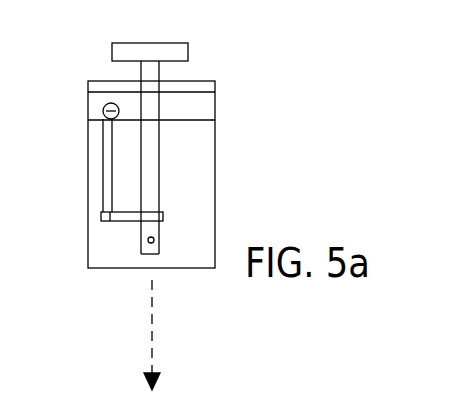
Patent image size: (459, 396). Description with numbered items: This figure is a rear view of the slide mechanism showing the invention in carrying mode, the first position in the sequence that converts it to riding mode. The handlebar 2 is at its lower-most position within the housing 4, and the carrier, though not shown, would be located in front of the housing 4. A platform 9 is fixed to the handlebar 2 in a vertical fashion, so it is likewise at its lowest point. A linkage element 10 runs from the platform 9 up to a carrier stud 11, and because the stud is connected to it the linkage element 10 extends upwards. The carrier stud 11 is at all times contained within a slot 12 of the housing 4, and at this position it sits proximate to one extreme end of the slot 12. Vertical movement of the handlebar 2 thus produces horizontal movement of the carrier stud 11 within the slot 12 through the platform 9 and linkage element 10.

The handlebar 2 is at (152, 56).
The housing 4 is at (189, 182).
The platform 9 is at (125, 218).
The linkage element 10 is at (112, 128).
The carrier stud 11 is at (105, 105).
The slot 12 is at (190, 105).